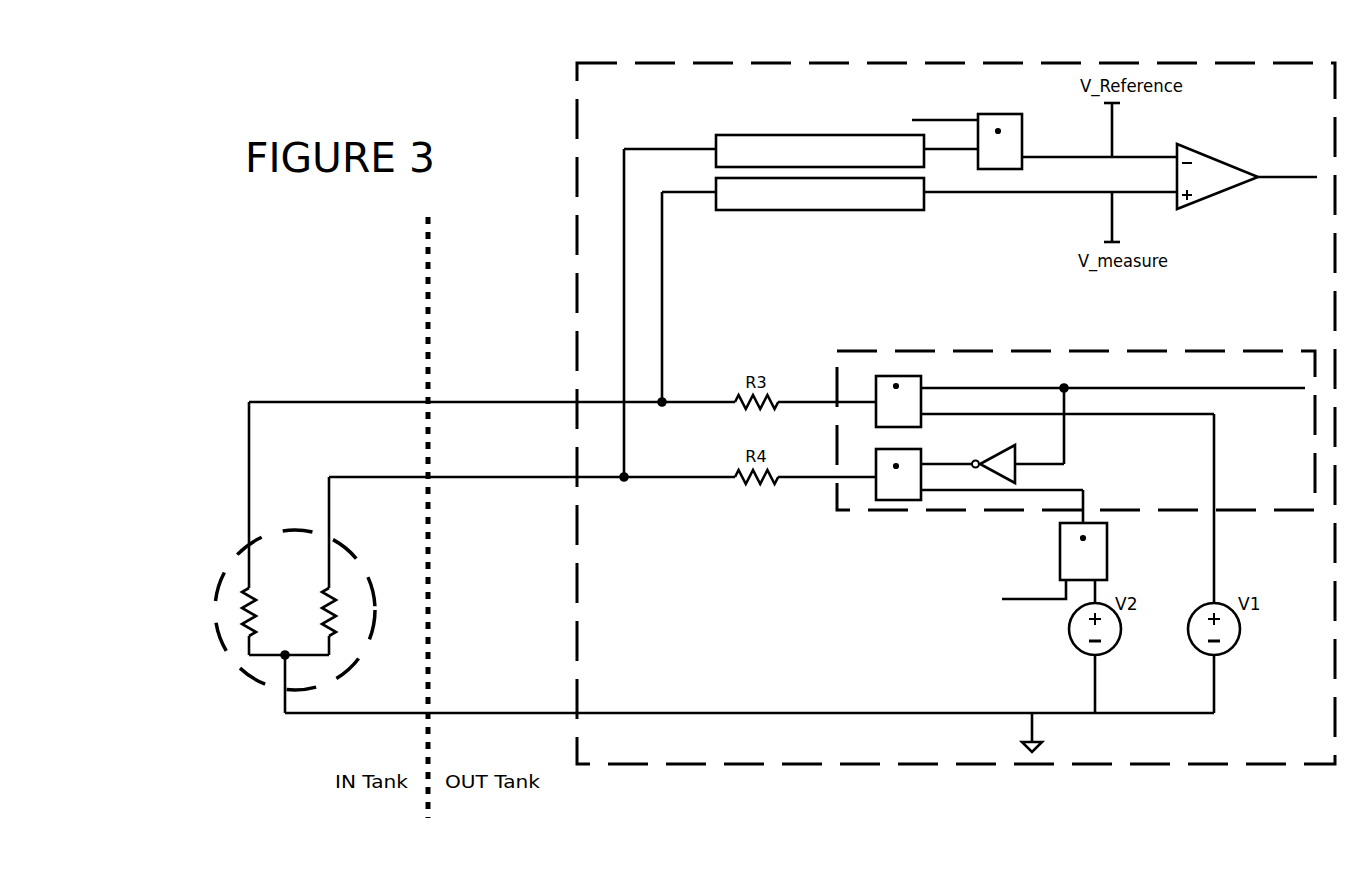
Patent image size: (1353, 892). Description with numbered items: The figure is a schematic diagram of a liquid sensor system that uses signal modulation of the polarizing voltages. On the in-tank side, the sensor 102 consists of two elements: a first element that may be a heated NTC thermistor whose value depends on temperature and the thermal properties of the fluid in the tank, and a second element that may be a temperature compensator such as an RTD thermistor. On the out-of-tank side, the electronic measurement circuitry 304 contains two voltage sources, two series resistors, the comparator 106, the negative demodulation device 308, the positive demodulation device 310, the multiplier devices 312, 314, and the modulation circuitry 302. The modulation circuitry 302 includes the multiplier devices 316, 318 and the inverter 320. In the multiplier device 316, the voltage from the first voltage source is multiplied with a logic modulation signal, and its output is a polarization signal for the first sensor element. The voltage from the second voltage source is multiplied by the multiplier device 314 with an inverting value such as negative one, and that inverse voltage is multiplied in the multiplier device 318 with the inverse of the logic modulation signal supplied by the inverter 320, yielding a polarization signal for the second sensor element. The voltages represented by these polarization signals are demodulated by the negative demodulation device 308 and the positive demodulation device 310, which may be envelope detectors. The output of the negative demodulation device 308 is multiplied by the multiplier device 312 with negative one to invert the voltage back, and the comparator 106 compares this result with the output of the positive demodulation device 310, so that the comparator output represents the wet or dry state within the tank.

The sensor 102 is at (250, 664).
The comparator 106 is at (1233, 163).
The modulation circuitry 302 is at (1267, 350).
The electronic measurement circuitry 304 is at (715, 764).
The negative demodulation device 308 is at (813, 134).
The positive demodulation device 310 is at (774, 211).
The multiplier device 312 is at (997, 114).
The multiplier device 314 is at (1108, 538).
The multiplier device 316 is at (890, 375).
The multiplier device 318 is at (898, 502).
The inverter 320 is at (997, 452).